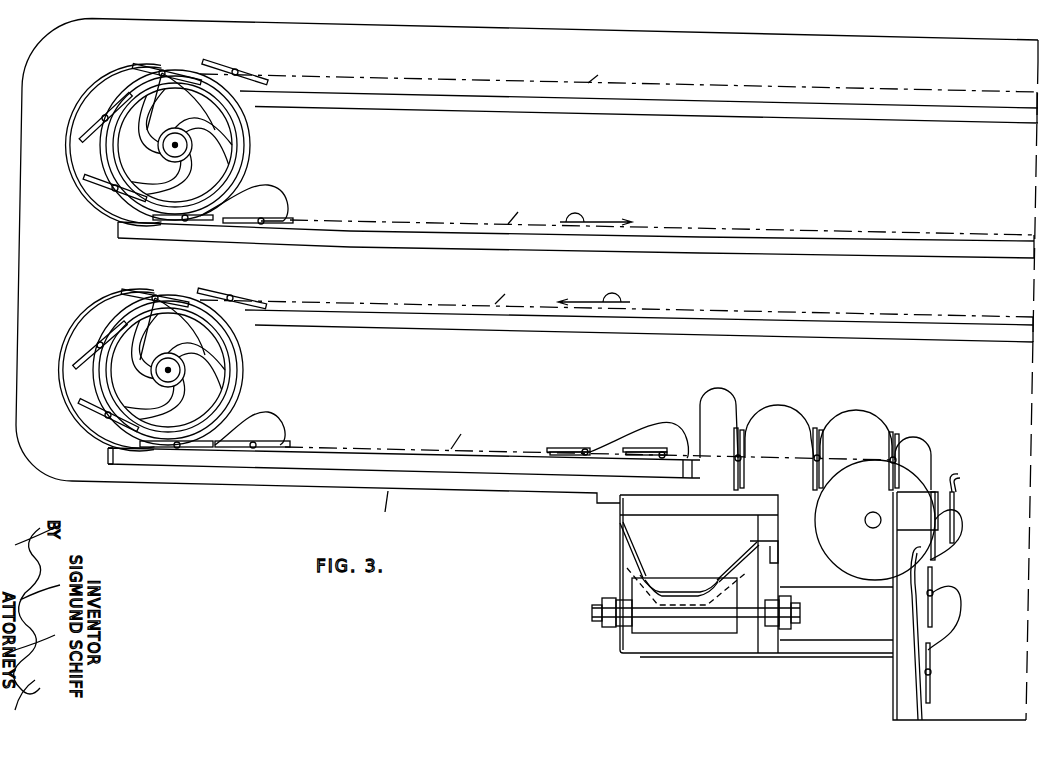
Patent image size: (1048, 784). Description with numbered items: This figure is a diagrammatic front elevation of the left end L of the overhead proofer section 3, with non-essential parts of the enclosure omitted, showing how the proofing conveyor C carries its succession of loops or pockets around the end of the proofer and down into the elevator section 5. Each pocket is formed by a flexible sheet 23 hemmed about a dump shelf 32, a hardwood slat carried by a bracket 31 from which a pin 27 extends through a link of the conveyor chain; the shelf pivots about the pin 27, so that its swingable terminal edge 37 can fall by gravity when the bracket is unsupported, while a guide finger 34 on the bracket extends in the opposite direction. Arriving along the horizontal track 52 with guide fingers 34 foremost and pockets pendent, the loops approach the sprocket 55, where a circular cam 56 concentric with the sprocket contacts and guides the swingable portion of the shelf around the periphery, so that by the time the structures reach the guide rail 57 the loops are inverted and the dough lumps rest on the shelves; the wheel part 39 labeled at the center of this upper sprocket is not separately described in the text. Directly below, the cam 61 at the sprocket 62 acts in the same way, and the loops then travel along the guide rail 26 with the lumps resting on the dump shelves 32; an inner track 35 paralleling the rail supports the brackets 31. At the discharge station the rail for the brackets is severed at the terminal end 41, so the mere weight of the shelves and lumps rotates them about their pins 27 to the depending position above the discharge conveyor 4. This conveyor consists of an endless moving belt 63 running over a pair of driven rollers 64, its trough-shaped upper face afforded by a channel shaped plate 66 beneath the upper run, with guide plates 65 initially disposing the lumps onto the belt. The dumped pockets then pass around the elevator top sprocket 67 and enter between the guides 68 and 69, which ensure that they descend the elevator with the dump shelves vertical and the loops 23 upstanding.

The overhead proofer section 3 is at (539, 29).
The discharge station 4 is at (630, 597).
The elevator section 5 is at (892, 701).
The flexible sheet 23 is at (271, 186).
The guide rail 26 is at (318, 451).
The pin 27 is at (104, 117).
The dump shelf bracket 31 is at (233, 456).
The dump shelf 32 is at (268, 88).
The guide finger 34 is at (86, 136).
The inner track 35 is at (108, 458).
The swingable terminal edge 37 is at (888, 503).
The upper wheel hub and spokes 39 is at (196, 116).
The terminal end 41 is at (696, 469).
The horizontal track 52 is at (630, 102).
The sprocket 55 is at (132, 84).
The circular cam 56 is at (147, 88).
The guide rail 57 is at (330, 230).
The cam 61 is at (232, 368).
The sprocket 62 is at (241, 381).
The endless moving belt 63 is at (658, 581).
The driven rollers 64 is at (628, 573).
The guide plates 65 is at (634, 556).
The channel shaped plate 66 is at (674, 591).
The elevator top sprocket 67 is at (908, 473).
The guide 68 is at (958, 483).
The guide 69 is at (920, 581).
The left end L is at (616, 412).
The proofing conveyor C is at (531, 252).